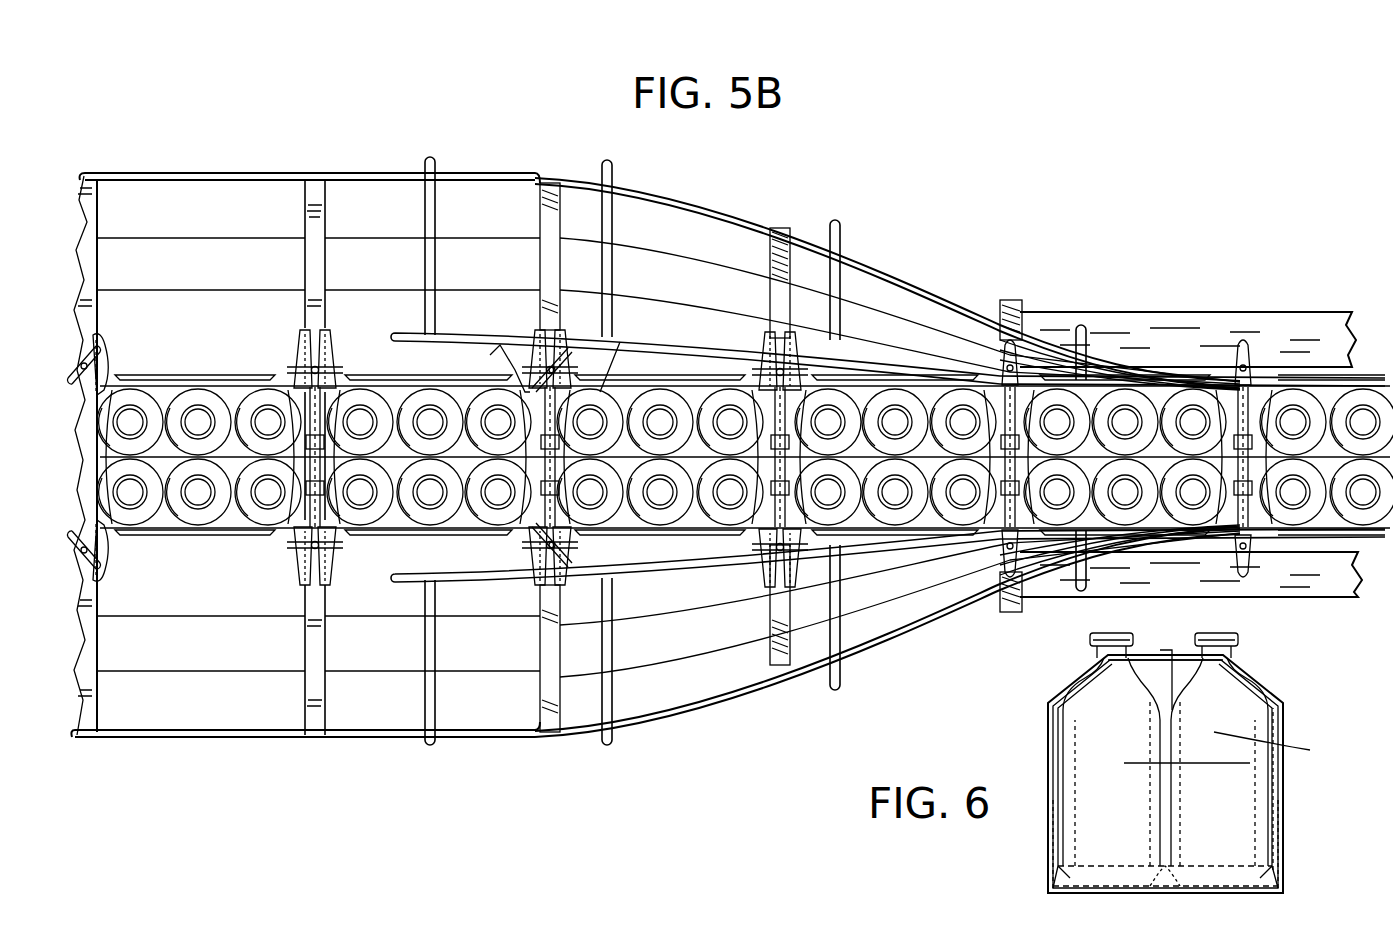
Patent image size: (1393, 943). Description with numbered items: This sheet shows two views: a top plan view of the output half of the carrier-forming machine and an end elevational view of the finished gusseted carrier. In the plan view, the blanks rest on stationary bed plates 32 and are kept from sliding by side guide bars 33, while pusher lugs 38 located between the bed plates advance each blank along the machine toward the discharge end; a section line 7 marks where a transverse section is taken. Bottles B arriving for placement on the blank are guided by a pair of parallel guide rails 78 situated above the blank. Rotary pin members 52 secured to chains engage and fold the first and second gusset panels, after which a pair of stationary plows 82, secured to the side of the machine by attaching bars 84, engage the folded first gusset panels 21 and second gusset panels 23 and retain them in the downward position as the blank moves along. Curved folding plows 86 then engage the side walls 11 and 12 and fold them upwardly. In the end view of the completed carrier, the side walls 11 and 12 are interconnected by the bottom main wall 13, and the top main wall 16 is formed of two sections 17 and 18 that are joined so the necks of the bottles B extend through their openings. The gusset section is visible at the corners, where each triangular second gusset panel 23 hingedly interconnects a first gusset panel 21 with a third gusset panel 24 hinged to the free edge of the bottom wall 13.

In FIG. 5B, the section line 7- 7 is at (350, 117).
In FIG. 6, the side wall 11 is at (1048, 752).
In FIG. 6, the side wall 12 is at (1283, 775).
In FIG. 6, the bottom main wall 13 is at (1142, 896).
In FIG. 6, the top main wall 16 is at (1159, 640).
In FIG. 6, the top wall section 17 is at (1075, 680).
In FIG. 6, the top wall section 18 is at (1262, 682).
In FIG. 5B, the first gusset panel 21 is at (562, 335).
In FIG. 6, the first gusset panel 21 is at (1050, 855).
In FIG. 6, the second gusset panel 23 is at (1050, 872).
In FIG. 6, the third gusset panel 24 is at (1198, 882).
In FIG. 5B, the stationary bed plate 32 is at (88, 282).
In FIG. 5B, the side guide bar 33 is at (215, 174).
In FIG. 5B, the pusher lug 38 is at (128, 410).
In FIG. 5B, the rotary pin member 52 is at (104, 356).
In FIG. 5B, the guide rail 78 is at (245, 372).
In FIG. 5B, the stationary plow 82 is at (684, 352).
In FIG. 5B, the attaching bar 84 is at (434, 216).
In FIG. 5B, the curved folding plow 86 is at (912, 293).
In FIG. 5B, the bottle B is at (652, 532).
In FIG. 6, the bottle B is at (1300, 752).